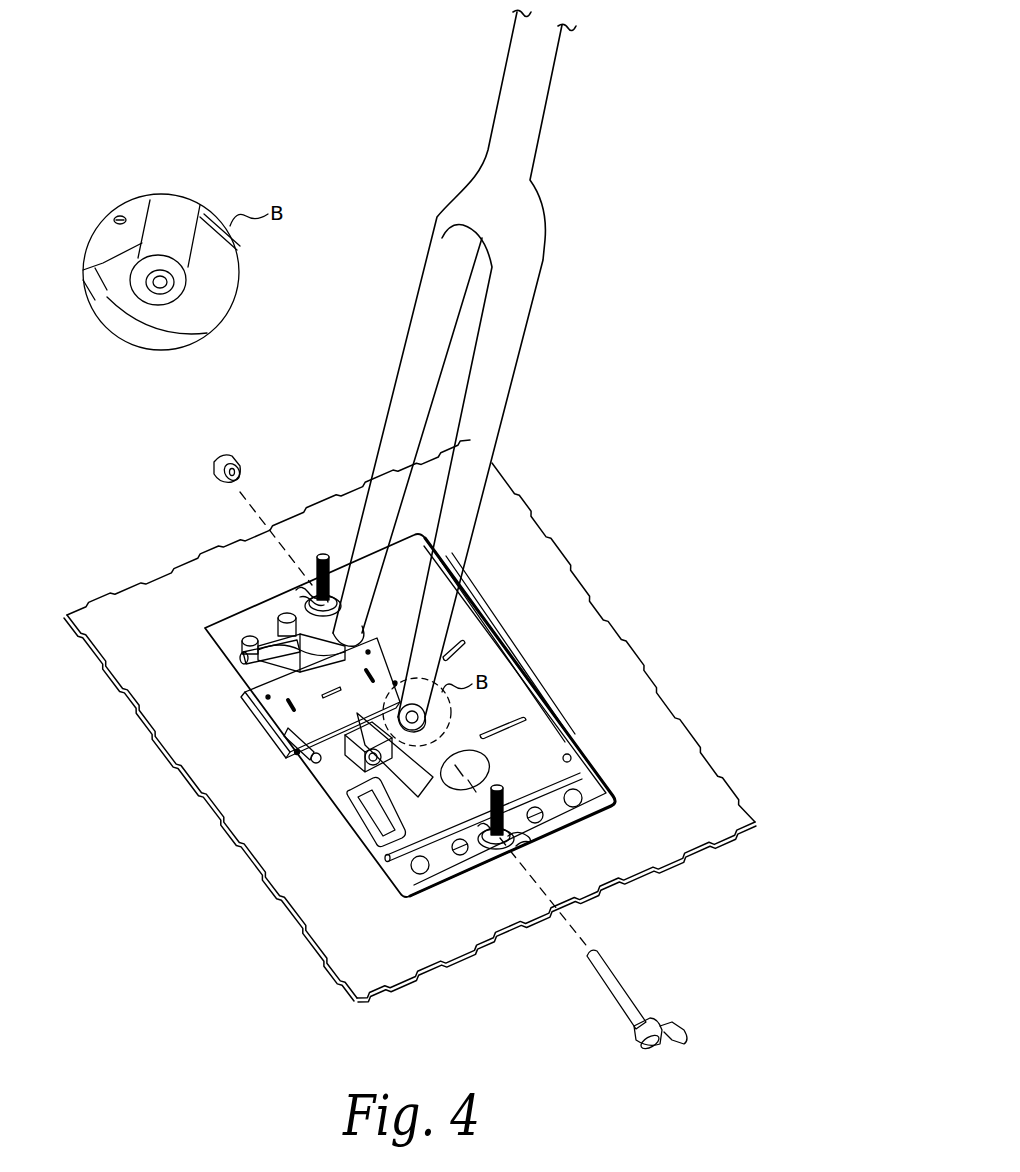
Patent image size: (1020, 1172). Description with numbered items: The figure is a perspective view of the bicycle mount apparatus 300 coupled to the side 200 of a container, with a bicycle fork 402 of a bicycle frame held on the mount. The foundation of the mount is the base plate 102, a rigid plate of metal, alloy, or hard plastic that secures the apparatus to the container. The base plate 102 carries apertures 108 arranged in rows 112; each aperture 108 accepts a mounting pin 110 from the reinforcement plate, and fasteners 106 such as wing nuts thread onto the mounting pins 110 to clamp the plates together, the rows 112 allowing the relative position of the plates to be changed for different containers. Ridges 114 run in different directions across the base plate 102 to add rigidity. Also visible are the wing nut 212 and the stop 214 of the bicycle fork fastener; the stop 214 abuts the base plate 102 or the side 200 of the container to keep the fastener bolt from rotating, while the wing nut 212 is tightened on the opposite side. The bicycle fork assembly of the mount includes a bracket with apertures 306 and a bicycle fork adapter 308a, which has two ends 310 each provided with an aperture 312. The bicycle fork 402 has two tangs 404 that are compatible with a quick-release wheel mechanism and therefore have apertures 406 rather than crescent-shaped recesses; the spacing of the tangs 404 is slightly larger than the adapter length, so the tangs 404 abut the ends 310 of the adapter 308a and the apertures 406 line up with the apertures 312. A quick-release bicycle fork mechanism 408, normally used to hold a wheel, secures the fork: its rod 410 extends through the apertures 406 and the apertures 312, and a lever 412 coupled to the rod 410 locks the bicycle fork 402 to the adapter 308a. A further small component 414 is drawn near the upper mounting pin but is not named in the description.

The base plate 102 is at (204, 622).
The fasteners 106 is at (298, 596).
The aperture 108 is at (585, 804).
The mounting pin 110 is at (324, 556).
The rows 112 is at (598, 797).
The ridges 114 is at (572, 756).
The side 200 is at (608, 632).
The wing nut 212 is at (258, 624).
The stop 214 is at (390, 794).
The bicycle mount apparatus 300 is at (286, 725).
The apertures 306 is at (350, 778).
The bicycle fork adapter 308a is at (253, 687).
The ends 310 is at (248, 672).
The apertures 312 is at (297, 755).
The bicycle fork 402 is at (548, 118).
The tangs 404 is at (410, 302).
The apertures 406 is at (172, 298).
The quick-release bicycle fork mechanism 408 is at (668, 1010).
The rod 410 is at (600, 958).
The lever 412 is at (688, 1038).
The nut 414 is at (210, 460).